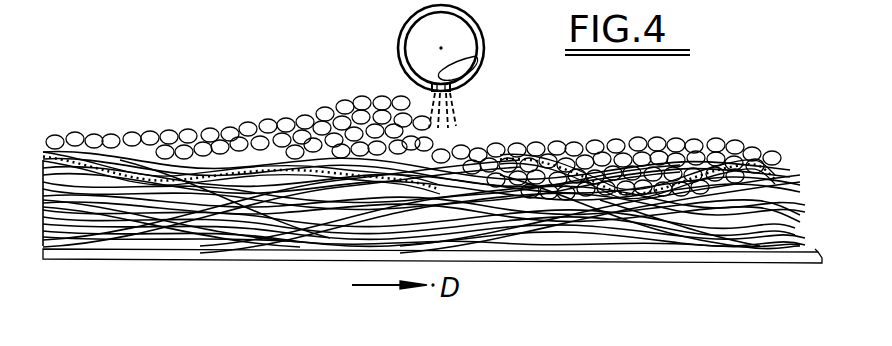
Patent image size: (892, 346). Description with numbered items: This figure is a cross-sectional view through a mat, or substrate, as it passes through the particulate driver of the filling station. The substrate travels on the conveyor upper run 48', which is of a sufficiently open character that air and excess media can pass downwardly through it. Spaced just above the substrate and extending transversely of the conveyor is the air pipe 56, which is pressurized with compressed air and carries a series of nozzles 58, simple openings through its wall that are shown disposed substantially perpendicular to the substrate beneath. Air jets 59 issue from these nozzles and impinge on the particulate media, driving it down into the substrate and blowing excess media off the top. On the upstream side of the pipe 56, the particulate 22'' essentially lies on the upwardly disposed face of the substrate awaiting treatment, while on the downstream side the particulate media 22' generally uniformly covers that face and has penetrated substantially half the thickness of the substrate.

The particulate media 22' is at (606, 143).
The particulate 22'' is at (241, 123).
The upper run 48' is at (432, 277).
The air pipe 56 is at (410, 21).
The nozzles 58 is at (478, 56).
The air jets 59 is at (455, 128).